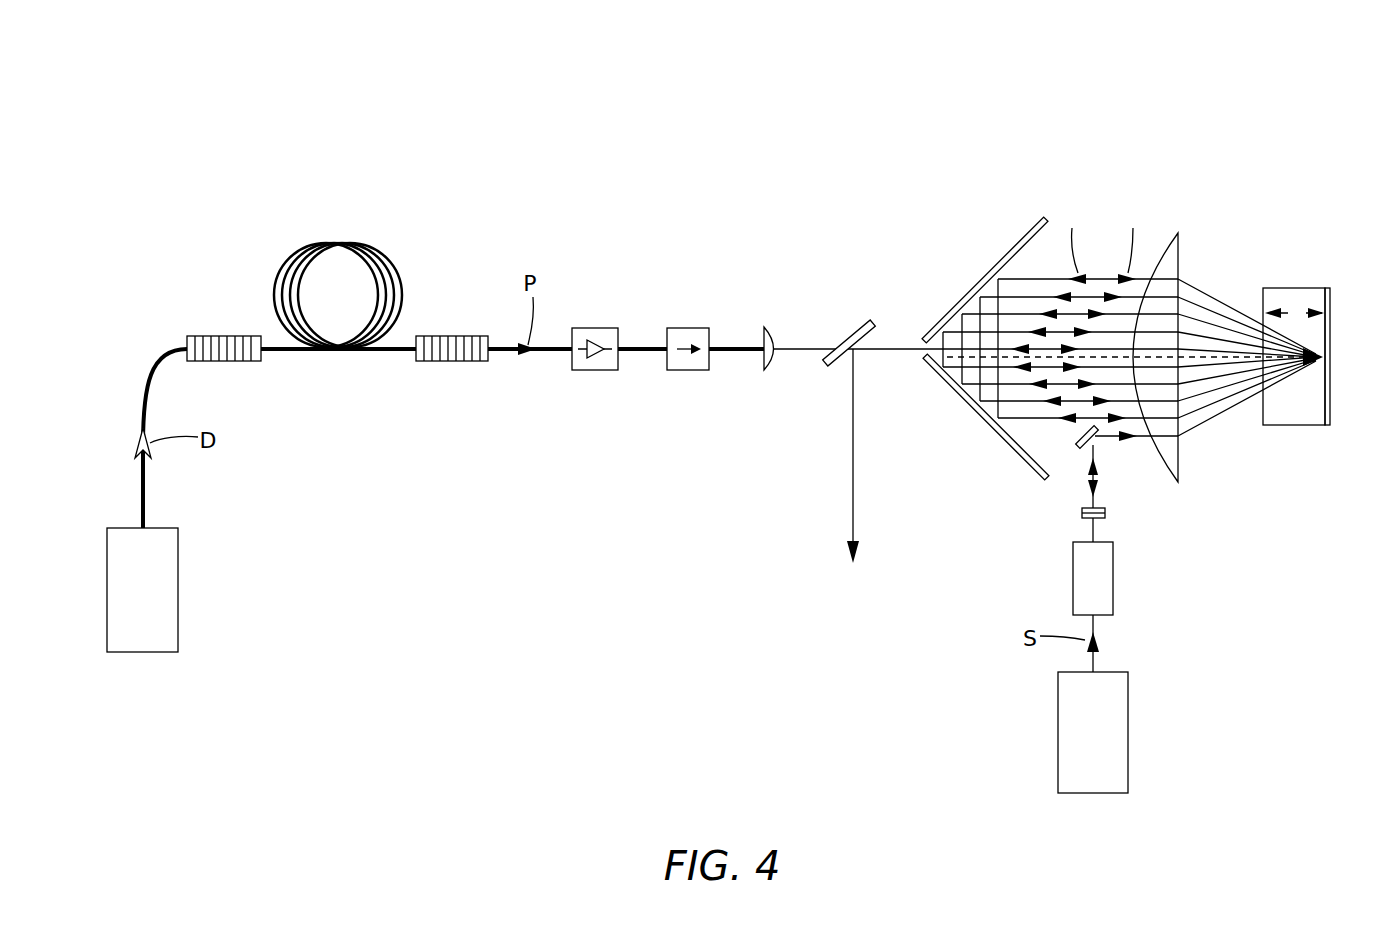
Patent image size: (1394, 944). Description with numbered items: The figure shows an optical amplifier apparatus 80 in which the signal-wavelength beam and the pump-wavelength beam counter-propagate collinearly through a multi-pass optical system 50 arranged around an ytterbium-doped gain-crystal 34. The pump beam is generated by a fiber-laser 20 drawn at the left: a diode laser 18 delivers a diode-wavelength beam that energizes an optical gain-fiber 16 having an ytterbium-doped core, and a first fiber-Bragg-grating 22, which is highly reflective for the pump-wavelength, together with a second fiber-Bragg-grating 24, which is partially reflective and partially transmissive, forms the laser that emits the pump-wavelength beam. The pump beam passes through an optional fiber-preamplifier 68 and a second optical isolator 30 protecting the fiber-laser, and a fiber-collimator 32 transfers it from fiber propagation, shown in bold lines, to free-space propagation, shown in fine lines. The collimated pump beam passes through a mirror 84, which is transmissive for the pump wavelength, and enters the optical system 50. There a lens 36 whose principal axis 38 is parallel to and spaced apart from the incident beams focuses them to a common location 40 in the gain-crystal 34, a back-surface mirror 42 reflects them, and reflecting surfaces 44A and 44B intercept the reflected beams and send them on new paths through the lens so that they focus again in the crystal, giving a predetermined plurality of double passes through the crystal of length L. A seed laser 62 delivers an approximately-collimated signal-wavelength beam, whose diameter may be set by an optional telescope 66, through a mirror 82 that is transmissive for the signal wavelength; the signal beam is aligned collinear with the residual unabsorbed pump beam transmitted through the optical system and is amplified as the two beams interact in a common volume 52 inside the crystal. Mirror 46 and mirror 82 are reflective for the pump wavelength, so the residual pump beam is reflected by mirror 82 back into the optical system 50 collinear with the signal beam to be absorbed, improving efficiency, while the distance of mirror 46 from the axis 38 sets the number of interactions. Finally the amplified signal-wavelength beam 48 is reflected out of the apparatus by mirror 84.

The optical gain-fiber 16 is at (338, 240).
The diode laser 18 is at (178, 628).
The fiber-laser 20 is at (519, 115).
The first fiber-Bragg-grating 22 is at (247, 336).
The second fiber-Bragg-grating 24 is at (440, 336).
The second optical isolator 30 is at (680, 328).
The fiber-collimator 32 is at (765, 327).
The ytterbium-doped gain-crystal 34 is at (1278, 278).
The lens 36 is at (1170, 232).
The principal axis 38 is at (1230, 357).
The common location 40 is at (1323, 362).
The back-surface mirror 42 is at (1330, 286).
The reflecting surface 44A is at (1000, 267).
The reflecting surface 44B is at (1000, 430).
The mirror 46 is at (1085, 445).
The amplified signal-wavelength beam 48 is at (851, 482).
The optical system 50 is at (978, 111).
The common volume 52 is at (1308, 385).
The seed laser 62 is at (1130, 770).
The telescope 66 is at (1115, 600).
The fiber-preamplifier 68 is at (585, 328).
The amplifier apparatus 80 is at (460, 750).
The mirror 82 is at (1107, 513).
The mirror 84 is at (860, 320).